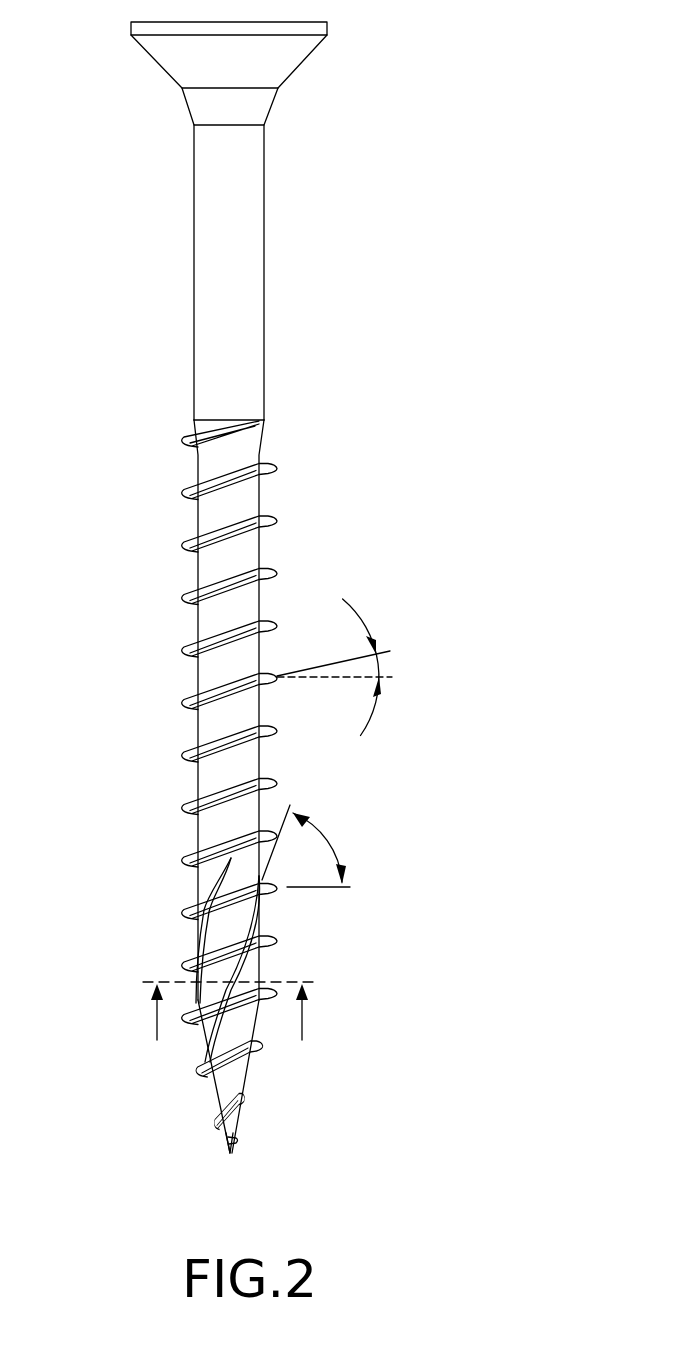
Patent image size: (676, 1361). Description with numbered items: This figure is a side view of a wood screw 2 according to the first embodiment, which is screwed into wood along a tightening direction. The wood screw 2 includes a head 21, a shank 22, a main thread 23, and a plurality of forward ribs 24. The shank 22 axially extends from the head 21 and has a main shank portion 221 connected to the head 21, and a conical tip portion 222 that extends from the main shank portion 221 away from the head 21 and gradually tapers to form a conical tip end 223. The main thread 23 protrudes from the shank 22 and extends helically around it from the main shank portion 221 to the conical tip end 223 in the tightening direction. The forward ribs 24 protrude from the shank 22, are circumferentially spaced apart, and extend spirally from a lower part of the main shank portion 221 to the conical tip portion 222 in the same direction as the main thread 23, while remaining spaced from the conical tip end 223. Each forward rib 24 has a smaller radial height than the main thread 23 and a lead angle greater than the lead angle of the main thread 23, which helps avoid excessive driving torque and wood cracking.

The wood screw 2 is at (330, 248).
The head 21 is at (300, 53).
The shank 22 is at (290, 329).
The main shank portion 221 is at (197, 304).
The conical tip portion 222 is at (227, 1038).
The conical tip end 223 is at (232, 1150).
The main thread 23 is at (280, 464).
The forward ribs 24 is at (176, 938).